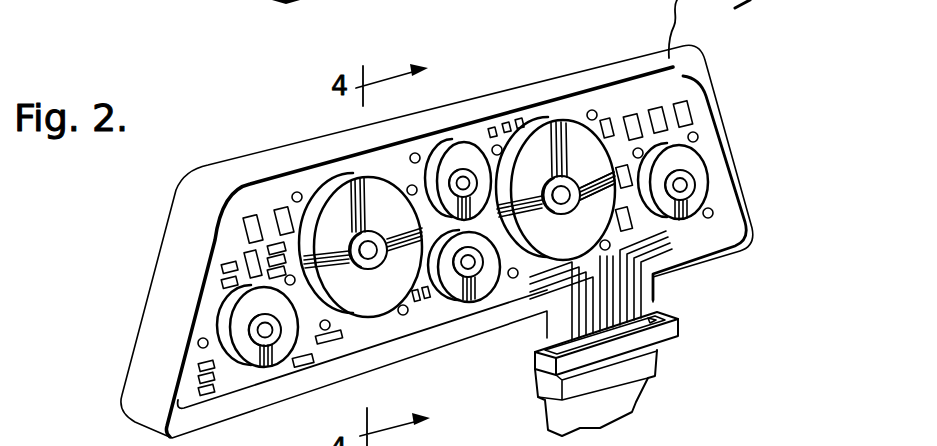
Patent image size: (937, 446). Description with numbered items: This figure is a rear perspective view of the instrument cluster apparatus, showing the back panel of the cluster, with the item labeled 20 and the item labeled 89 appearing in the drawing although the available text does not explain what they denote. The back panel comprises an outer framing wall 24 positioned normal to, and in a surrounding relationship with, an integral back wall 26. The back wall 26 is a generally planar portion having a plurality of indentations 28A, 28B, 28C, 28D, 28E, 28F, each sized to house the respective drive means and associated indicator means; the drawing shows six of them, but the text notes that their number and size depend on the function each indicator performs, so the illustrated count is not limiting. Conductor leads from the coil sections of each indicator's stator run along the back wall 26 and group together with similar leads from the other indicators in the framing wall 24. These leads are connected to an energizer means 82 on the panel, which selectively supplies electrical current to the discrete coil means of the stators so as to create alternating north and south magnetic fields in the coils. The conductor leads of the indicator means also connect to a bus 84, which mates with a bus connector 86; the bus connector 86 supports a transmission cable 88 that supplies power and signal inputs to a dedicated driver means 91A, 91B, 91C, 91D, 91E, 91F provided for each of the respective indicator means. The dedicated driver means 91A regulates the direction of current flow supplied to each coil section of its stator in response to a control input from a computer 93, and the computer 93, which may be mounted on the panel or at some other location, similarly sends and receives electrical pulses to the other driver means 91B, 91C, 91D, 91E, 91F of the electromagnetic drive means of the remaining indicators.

The instrument cluster 20 is at (125, 5).
The outer framing wall 24 is at (157, 338).
The back wall 26 is at (215, 217).
The indentation 28A is at (317, 162).
The indentation 28B is at (212, 312).
The indentation 28C is at (486, 280).
The indentation 28D is at (452, 134).
The indentation 28E is at (563, 118).
The indentation 28F is at (716, 155).
The energizer means 82 is at (414, 303).
The bus 84 is at (650, 292).
The bus connector 86 is at (652, 352).
The transmission cable 88 is at (640, 400).
The pointer 89 is at (620, 170).
The dedicated driver means 91A is at (269, 207).
The driver means 91B is at (246, 262).
The driver means 91C is at (429, 299).
The driver means 91D is at (500, 160).
The driver means 91E is at (664, 86).
The driver means 91F is at (618, 217).
The computer 93 is at (305, 367).